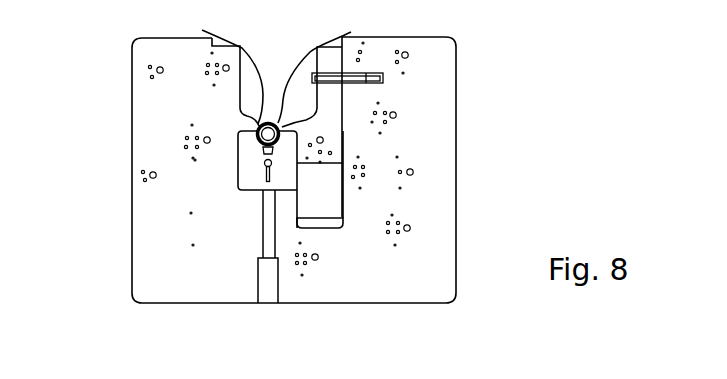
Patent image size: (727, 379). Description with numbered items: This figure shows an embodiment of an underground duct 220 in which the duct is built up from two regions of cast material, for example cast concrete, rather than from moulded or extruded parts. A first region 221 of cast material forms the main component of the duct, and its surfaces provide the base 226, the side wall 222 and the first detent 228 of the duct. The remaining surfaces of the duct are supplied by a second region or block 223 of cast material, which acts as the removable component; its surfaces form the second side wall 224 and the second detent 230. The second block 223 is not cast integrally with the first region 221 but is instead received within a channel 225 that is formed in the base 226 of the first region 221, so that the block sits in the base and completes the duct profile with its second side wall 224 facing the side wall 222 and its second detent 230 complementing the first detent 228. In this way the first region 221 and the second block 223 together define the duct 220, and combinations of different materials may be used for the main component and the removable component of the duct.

The duct 220 is at (277, 190).
The first region of cast material 221 is at (173, 93).
The side wall 222 is at (238, 162).
The second region or block of cast material 223 is at (327, 193).
The second side wall 224 is at (343, 165).
The channel 225 is at (323, 228).
The base 226 is at (253, 192).
The first detent 228 is at (250, 122).
The second detent 230 is at (287, 122).